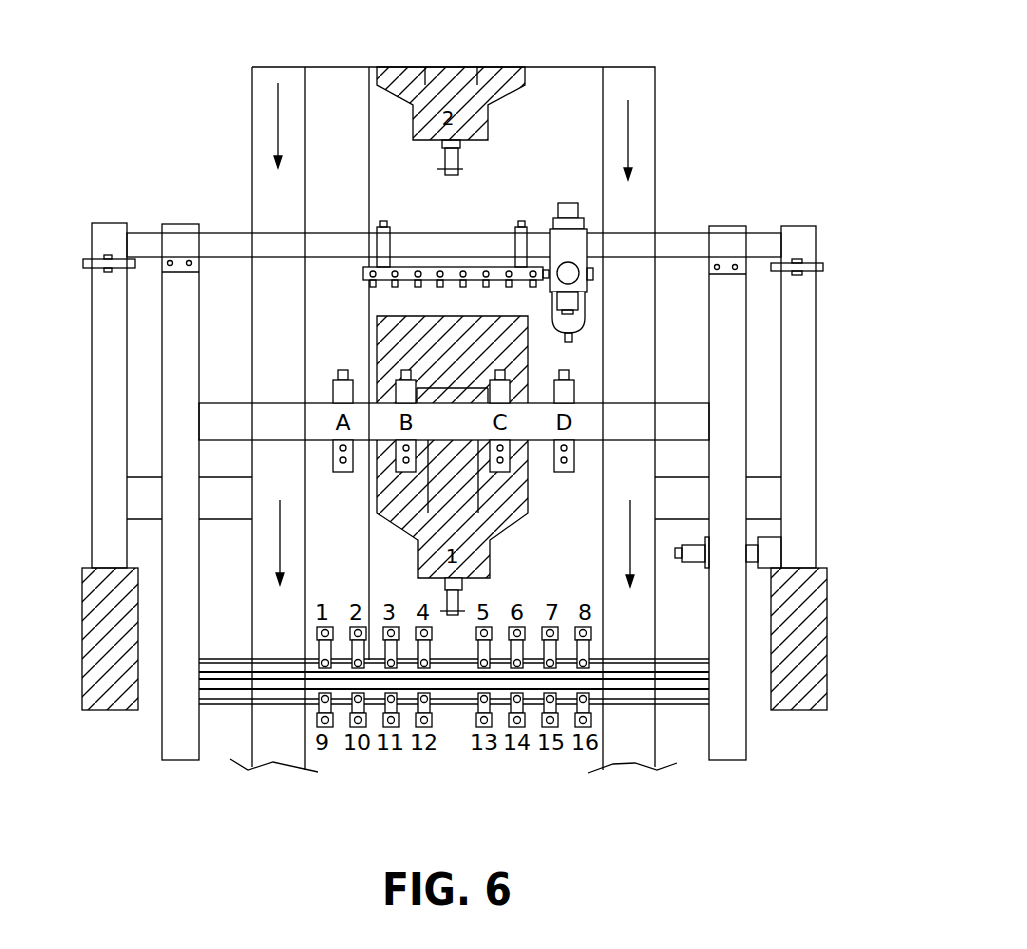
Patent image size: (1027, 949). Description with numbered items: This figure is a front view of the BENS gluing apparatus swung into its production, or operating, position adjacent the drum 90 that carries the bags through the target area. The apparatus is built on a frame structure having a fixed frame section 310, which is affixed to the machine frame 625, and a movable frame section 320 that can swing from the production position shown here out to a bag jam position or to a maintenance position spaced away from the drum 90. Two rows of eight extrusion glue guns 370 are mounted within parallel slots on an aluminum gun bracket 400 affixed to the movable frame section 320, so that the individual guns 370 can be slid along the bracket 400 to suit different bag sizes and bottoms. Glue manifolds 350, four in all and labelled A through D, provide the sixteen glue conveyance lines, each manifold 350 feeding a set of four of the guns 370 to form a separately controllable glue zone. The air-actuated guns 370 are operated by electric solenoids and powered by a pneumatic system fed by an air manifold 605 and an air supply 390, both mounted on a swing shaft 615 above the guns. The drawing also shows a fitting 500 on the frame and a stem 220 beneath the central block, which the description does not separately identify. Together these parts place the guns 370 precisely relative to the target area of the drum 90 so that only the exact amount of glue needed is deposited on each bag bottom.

The drum 90 is at (655, 113).
The air manifold 605 is at (430, 273).
The air supply 390 is at (563, 203).
The swing shaft 615 is at (675, 232).
The fixed frame section 310 is at (805, 345).
The movable frame section 320 is at (730, 402).
The glue manifold 350 is at (383, 420).
The clamp bolt 500 is at (768, 551).
The machine frame 625 is at (790, 710).
The gun bracket 400 is at (687, 688).
The extrusion glue guns 370 is at (320, 707).
The die stem 220 is at (458, 598).